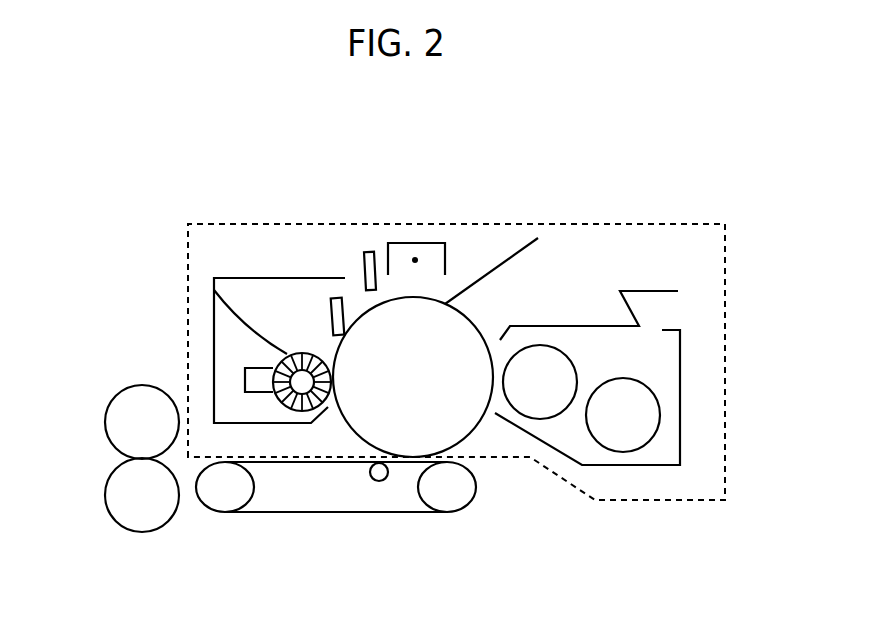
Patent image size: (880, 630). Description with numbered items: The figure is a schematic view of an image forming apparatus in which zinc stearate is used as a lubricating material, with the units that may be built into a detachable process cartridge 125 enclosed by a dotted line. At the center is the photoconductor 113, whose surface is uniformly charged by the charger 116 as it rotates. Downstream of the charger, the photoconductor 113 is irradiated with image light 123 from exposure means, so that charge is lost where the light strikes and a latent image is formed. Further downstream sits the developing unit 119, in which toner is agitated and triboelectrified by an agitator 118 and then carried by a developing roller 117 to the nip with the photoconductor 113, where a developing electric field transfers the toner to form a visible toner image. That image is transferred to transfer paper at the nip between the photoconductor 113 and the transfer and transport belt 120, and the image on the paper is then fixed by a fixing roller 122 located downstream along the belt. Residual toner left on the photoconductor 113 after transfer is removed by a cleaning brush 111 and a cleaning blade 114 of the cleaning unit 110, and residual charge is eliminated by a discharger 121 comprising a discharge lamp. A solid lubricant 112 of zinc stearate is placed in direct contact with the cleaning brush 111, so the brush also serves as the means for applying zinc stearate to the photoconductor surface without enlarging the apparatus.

The cleaning unit 110 is at (290, 278).
The cleaning brush 111 is at (214, 290).
The solid lubricant 112 is at (245, 377).
The photoconductor 113 is at (482, 337).
The cleaning blade 114 is at (337, 297).
The charger 116 is at (438, 243).
The developing roller 117 is at (537, 408).
The agitator 118 is at (627, 438).
The developing unit 119 is at (556, 326).
The transfer and transport belt 120 is at (362, 514).
The discharger 121 is at (368, 252).
The fixing roller 122 is at (110, 403).
The image light 123 is at (508, 258).
The process cartridge 125 is at (725, 427).